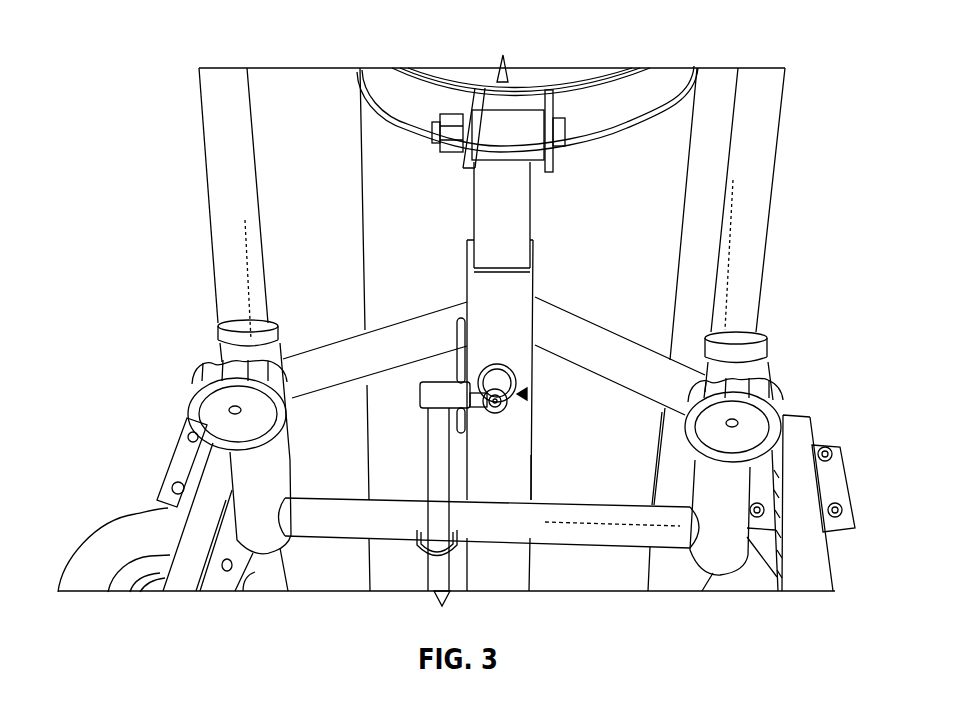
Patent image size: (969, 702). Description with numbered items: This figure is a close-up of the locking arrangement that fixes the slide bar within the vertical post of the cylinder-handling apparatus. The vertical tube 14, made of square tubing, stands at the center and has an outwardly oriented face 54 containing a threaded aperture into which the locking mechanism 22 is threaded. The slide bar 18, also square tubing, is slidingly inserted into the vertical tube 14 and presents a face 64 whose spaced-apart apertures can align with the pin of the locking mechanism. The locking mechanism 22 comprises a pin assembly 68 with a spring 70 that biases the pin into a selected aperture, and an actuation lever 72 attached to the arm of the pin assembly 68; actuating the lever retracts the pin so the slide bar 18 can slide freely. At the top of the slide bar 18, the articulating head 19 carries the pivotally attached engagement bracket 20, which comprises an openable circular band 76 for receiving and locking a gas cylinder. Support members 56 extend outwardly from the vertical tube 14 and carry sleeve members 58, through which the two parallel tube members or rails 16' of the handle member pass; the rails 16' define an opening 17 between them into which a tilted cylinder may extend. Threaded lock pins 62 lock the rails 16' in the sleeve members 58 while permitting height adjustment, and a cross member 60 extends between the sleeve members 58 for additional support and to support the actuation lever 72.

The vertical tube 14 is at (530, 492).
The rail (parallel tube member) 16' is at (456, 330).
The opening 17 is at (303, 142).
The slide bar 18 is at (490, 240).
The articulating head 19 is at (446, 162).
The engagement bracket 20 is at (563, 161).
The locking mechanism 22 is at (530, 394).
The outwardly oriented face 54 is at (510, 475).
The support member 56 is at (320, 382).
The sleeve member 58 is at (218, 345).
The cross member 60 is at (572, 527).
The threaded lock pin 62 is at (193, 390).
The face 64 is at (514, 206).
The pin assembly 68 is at (514, 408).
The spring 70 is at (500, 367).
The actuation lever 72 is at (437, 480).
The openable circular band 76 is at (650, 87).